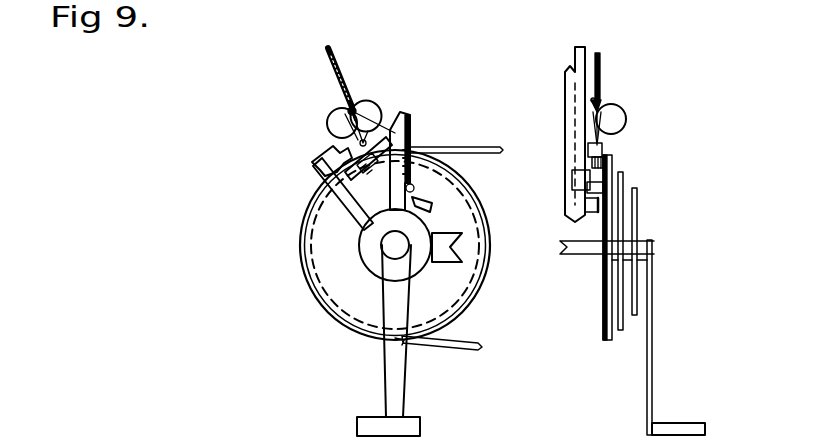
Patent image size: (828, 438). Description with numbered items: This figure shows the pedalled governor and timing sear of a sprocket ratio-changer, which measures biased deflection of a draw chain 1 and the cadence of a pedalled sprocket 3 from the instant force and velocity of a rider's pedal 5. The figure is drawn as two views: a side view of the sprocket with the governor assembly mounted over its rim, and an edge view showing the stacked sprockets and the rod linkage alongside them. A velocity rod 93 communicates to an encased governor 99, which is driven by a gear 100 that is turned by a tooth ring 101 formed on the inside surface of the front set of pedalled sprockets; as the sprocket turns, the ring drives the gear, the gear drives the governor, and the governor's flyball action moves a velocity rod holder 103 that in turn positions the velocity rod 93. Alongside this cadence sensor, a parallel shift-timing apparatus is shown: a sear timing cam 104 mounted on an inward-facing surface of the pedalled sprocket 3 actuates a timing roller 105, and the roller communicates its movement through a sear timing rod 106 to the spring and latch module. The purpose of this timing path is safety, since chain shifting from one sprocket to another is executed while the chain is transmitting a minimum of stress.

The draw chain 1 is at (343, 437).
The pedalled sprocket 3 is at (490, 282).
The rider's pedal 5 is at (420, 356).
The velocity rod 93 is at (316, 69).
The encased governor 99 is at (324, 143).
The gear 100 is at (348, 185).
The tooth ring 101 is at (308, 297).
The velocity rod holder 103 is at (336, 110).
The sear timing cam 104 is at (435, 192).
The timing roller 105 is at (416, 190).
The sear timing rod 106 is at (402, 113).